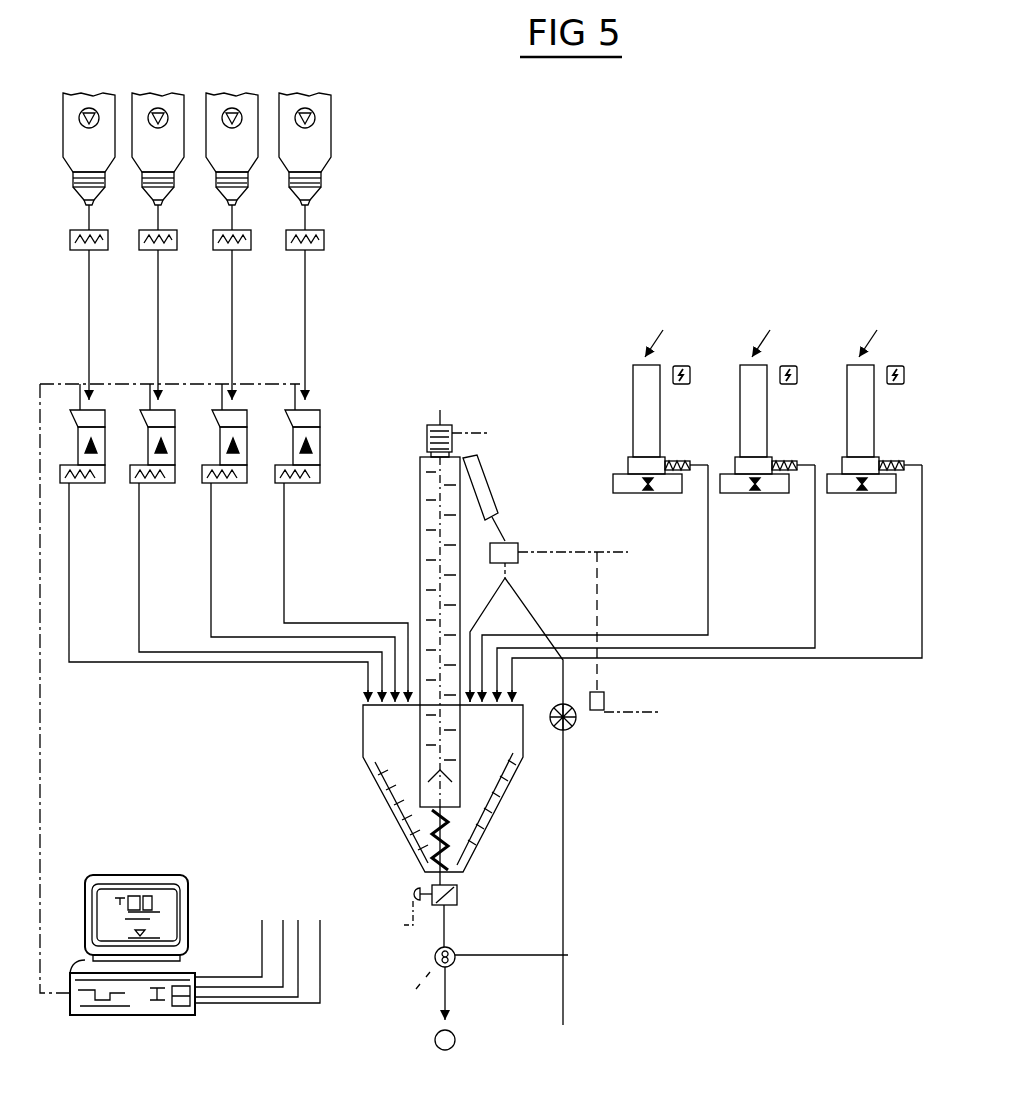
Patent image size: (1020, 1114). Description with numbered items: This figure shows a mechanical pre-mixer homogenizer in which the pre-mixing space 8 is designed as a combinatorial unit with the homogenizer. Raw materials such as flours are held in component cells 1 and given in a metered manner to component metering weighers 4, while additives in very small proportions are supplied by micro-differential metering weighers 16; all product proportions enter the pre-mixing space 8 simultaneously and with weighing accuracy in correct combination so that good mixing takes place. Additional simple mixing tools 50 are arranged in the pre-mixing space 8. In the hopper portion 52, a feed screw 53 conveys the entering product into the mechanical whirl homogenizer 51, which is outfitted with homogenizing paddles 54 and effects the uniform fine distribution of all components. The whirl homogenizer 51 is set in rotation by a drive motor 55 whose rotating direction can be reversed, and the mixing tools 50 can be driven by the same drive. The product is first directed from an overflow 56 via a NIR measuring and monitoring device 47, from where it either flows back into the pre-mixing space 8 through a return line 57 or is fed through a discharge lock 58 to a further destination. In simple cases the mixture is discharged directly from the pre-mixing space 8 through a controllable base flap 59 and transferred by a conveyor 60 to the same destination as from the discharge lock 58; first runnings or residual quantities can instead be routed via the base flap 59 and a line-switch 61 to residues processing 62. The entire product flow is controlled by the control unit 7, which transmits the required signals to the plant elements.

The component cell 1 is at (363, 135).
The component metering weigher 4 is at (333, 444).
The micro-differential metering weigher 16 is at (735, 290).
The drive motor 55 is at (448, 425).
The mechanical whirl homogenizer 51 is at (420, 503).
The overflow 56 is at (472, 478).
The NIR measuring and monitoring device 47 is at (505, 543).
The return line 57 is at (482, 612).
The discharge lock 58 is at (576, 722).
The pre-mixing space 8 is at (363, 730).
The homogenizing paddles 54 is at (462, 723).
The mixing tools 50 is at (512, 800).
The hopper portion 52 is at (410, 835).
The feed screw 53 is at (465, 835).
The controllable base flap 59 is at (457, 898).
The line-switch 61 is at (455, 965).
The conveyor 60 is at (522, 955).
The residues processing 62 is at (434, 1040).
The control unit 7 is at (165, 875).